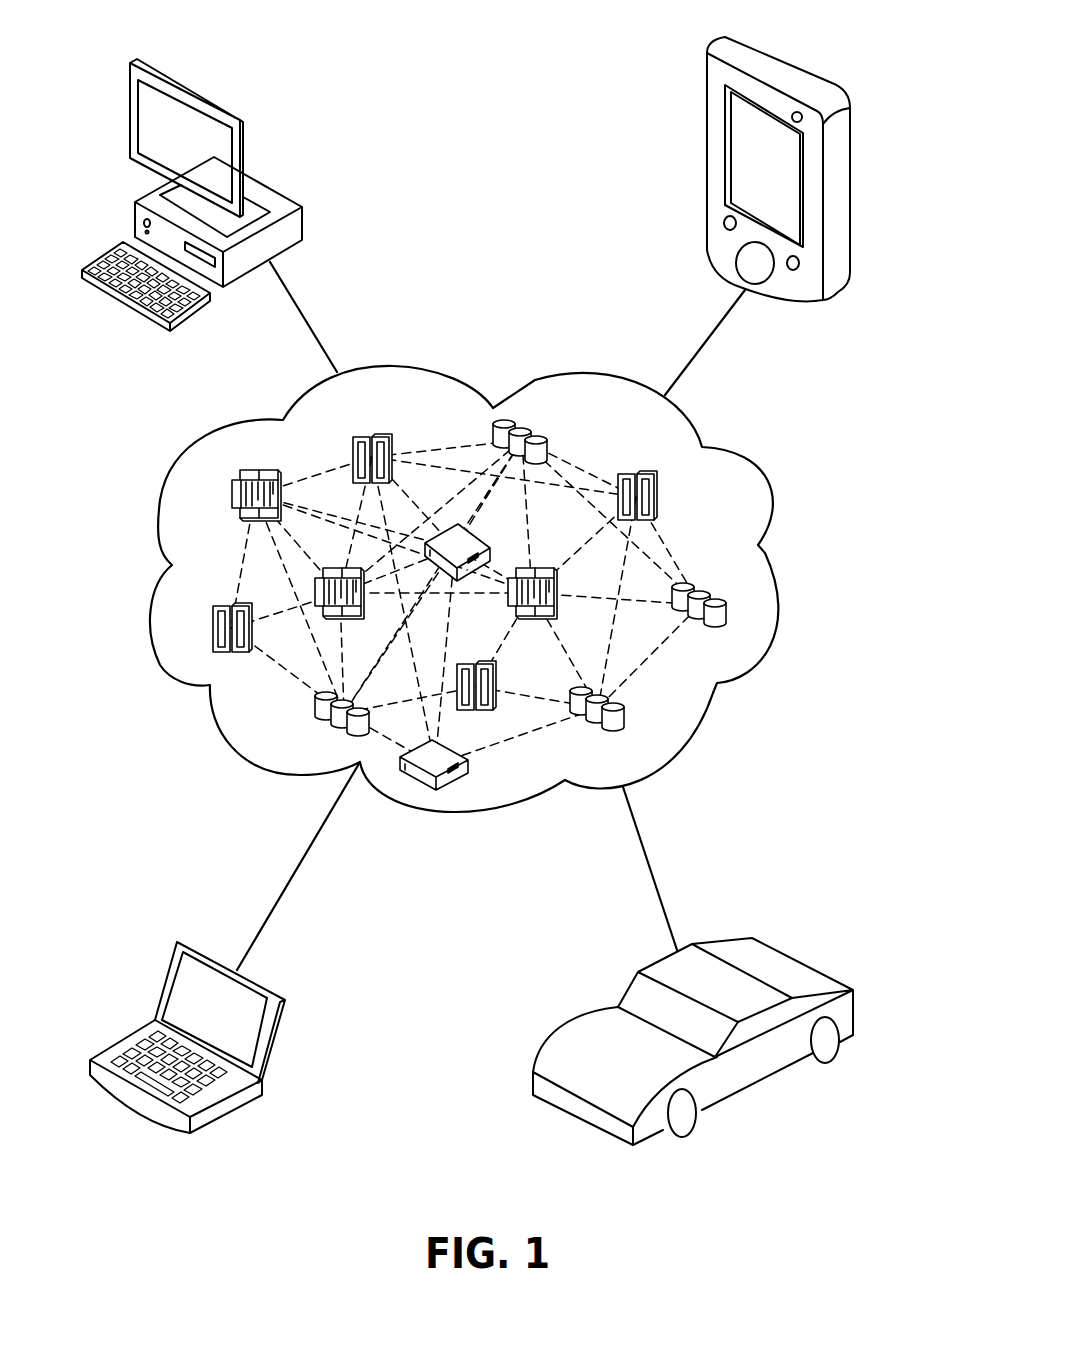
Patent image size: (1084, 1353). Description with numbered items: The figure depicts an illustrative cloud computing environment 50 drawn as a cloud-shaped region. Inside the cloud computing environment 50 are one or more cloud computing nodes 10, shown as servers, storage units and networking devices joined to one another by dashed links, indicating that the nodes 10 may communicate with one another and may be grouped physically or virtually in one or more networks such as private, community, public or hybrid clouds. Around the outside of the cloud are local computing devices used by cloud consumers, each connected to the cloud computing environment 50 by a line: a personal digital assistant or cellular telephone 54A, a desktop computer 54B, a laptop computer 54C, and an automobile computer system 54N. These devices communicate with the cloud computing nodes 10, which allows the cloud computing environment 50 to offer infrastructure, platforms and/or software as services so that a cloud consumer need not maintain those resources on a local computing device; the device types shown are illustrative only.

The cloud computing nodes 10 is at (703, 523).
The cloud computing environment 50 is at (758, 665).
The personal digital assistant (PDA) or cellular telephone 54A is at (703, 117).
The desktop computer 54B is at (303, 220).
The laptop computer 54C is at (287, 1010).
The automobile computer system 54N is at (853, 1008).